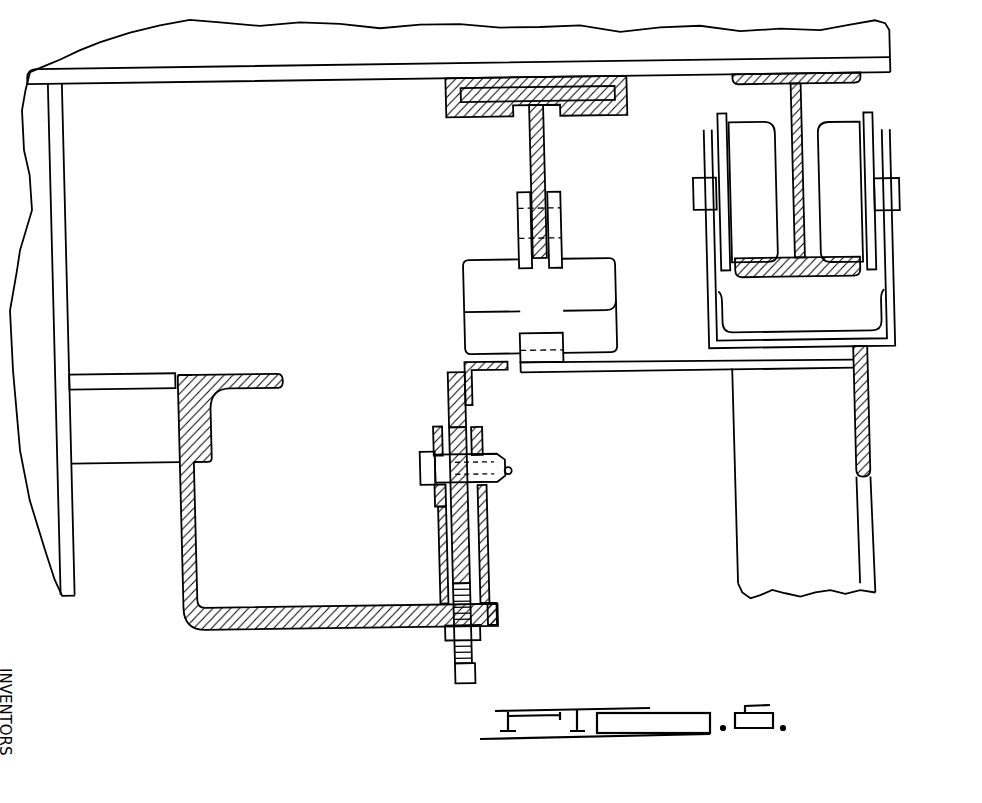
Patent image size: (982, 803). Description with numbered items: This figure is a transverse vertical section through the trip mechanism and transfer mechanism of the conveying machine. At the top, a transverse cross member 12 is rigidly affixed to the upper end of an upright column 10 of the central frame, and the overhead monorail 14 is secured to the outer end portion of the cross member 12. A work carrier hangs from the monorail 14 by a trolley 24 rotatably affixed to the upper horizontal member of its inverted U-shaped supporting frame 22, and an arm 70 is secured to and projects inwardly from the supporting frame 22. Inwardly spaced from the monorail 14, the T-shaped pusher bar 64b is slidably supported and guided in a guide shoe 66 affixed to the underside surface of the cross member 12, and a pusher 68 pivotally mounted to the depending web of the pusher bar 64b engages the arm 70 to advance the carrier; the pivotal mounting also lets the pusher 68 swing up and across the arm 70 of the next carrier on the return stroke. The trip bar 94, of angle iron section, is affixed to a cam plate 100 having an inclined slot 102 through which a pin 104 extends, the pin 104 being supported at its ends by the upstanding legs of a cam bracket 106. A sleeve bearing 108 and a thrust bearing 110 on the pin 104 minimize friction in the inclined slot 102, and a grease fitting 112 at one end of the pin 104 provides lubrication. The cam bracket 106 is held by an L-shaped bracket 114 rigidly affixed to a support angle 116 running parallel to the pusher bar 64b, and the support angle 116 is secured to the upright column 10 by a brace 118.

The upright column 10 is at (75, 268).
The transverse cross member 12 is at (280, 53).
The overhead monorail 14 is at (799, 116).
The supporting frame 22 is at (854, 405).
The trolley 24 is at (838, 183).
The pusher bar 64b is at (528, 142).
The guide shoe 66 is at (596, 124).
The pusher 68 is at (590, 276).
The arm 70 is at (639, 375).
The trip bar 94 is at (461, 366).
The cam plate 100 is at (451, 538).
The inclined slot 102 is at (422, 494).
The pin 104 is at (428, 476).
The cam bracket 106 is at (478, 571).
The sleeve bearing 108 is at (471, 451).
The thrust bearing 110 is at (438, 439).
The grease fitting 112 is at (502, 477).
The L-shaped bracket 114 is at (183, 557).
The support angle 116 is at (237, 383).
The brace 118 is at (90, 394).